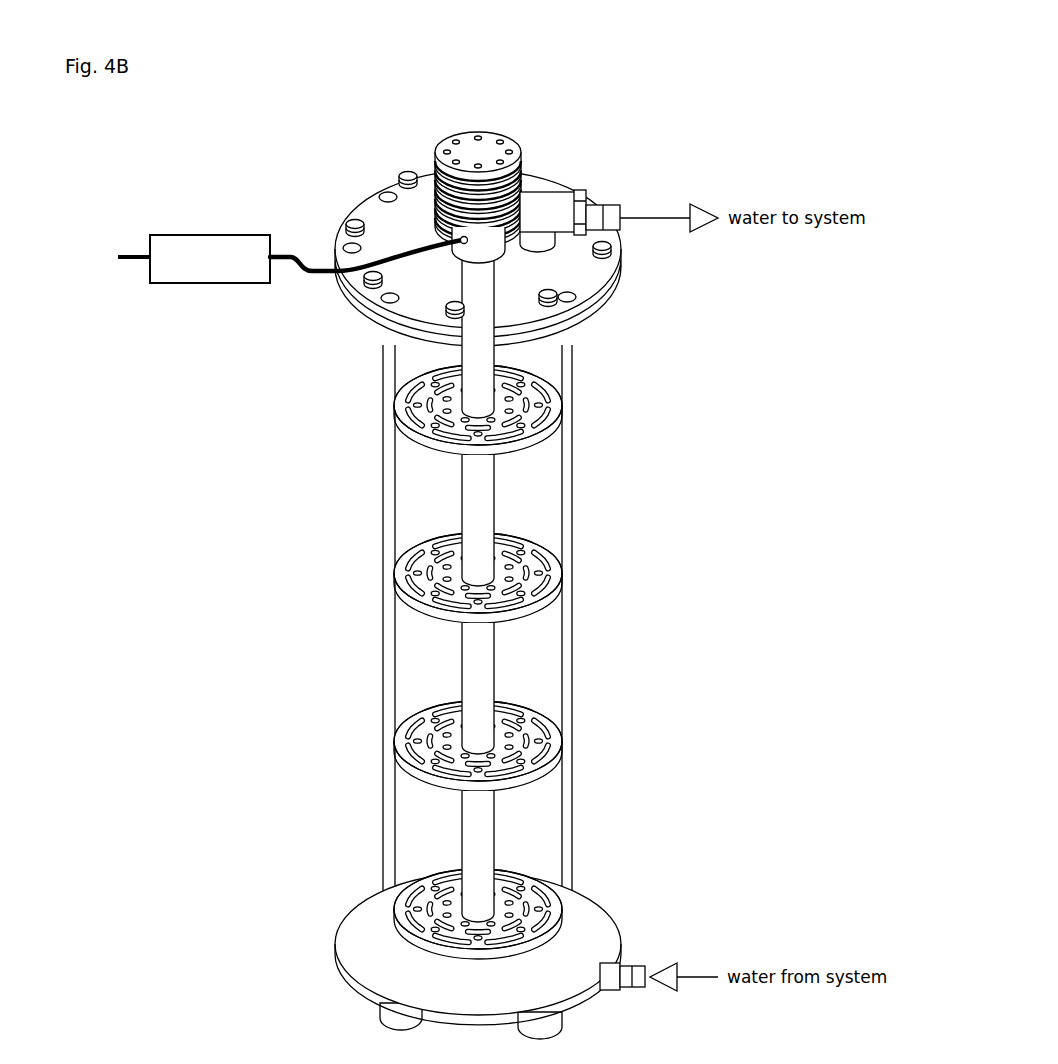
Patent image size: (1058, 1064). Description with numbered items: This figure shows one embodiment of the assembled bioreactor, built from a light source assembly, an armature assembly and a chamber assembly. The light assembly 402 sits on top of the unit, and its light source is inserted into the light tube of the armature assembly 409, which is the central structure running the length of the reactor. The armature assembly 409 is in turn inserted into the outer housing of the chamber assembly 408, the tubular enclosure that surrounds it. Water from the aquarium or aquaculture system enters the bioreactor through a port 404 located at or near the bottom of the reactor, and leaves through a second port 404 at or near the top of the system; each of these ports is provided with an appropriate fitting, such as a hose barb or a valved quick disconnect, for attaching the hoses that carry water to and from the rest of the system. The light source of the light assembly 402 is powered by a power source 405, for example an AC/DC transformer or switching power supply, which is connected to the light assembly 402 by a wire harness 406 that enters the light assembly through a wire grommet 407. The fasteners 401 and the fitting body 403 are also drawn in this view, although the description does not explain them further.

The fastening bolts 401 is at (396, 169).
The light assembly 402 is at (443, 132).
The outlet fitting block 403 is at (545, 194).
The port 404 is at (622, 204).
The power source 405 is at (203, 230).
The wire harness 406 is at (309, 279).
The wire grommet 407 is at (473, 244).
The chamber assembly 408 is at (578, 654).
The armature assembly 409 is at (499, 838).